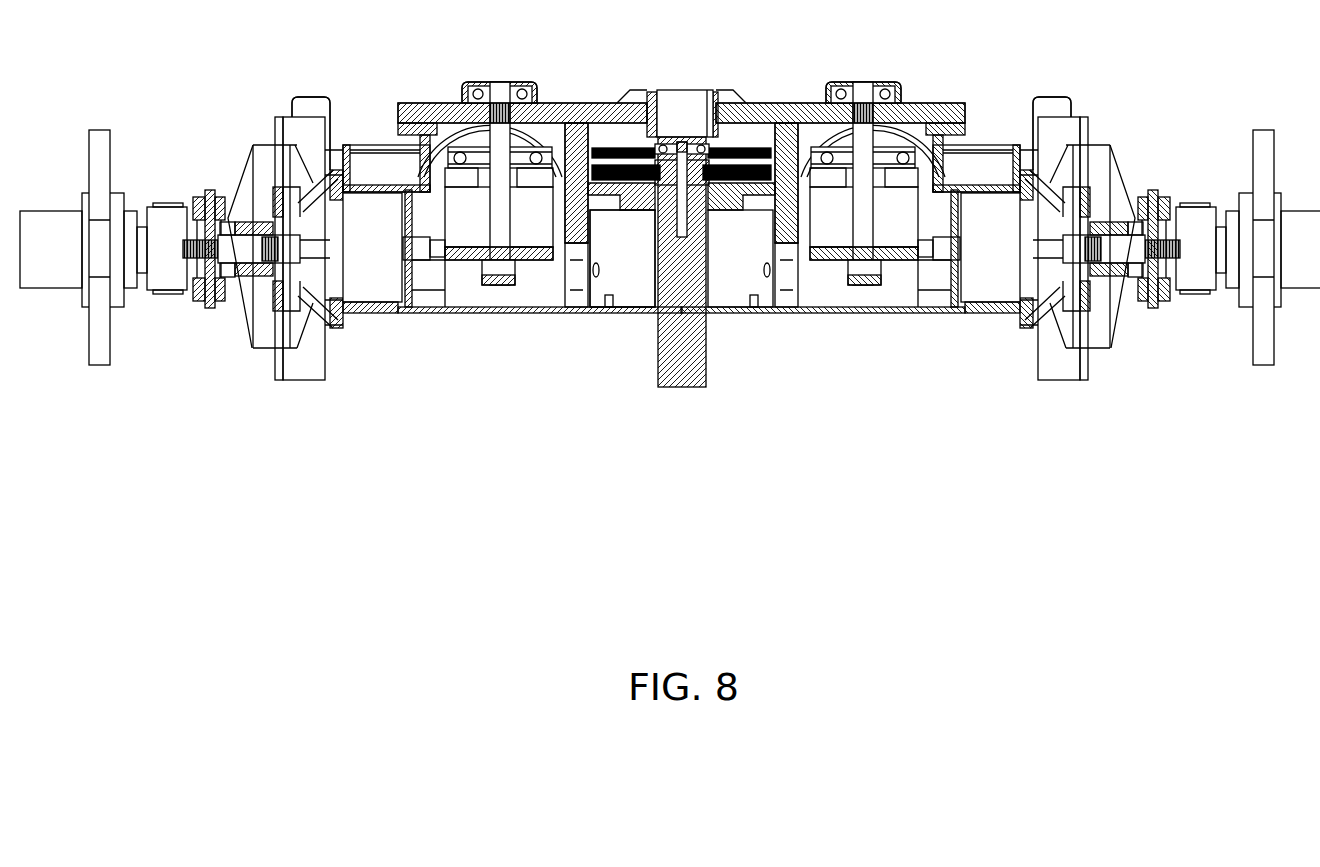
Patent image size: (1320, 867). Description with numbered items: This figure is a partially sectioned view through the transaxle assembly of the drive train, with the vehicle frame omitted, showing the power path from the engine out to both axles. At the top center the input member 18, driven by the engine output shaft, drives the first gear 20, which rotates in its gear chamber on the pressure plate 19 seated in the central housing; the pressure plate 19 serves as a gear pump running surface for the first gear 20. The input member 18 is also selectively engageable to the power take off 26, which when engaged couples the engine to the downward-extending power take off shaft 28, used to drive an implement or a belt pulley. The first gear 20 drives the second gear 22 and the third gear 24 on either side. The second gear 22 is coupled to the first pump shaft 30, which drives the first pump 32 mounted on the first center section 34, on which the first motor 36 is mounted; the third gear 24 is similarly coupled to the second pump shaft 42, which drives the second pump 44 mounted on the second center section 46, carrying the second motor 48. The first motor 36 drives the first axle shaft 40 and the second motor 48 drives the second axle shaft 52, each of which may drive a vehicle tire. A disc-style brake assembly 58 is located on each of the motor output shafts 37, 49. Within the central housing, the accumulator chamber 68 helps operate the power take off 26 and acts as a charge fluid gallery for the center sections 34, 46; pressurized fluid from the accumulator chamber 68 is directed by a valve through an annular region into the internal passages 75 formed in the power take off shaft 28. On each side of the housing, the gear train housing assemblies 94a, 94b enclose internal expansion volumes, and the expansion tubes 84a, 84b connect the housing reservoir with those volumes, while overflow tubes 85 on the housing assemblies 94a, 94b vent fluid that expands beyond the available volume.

The input member 18 is at (707, 105).
The pressure plate 19 is at (752, 108).
The first gear 20 is at (596, 108).
The second gear 22 is at (422, 105).
The third gear 24 is at (932, 108).
The power take off 26 is at (732, 245).
The power take off shaft 28 is at (706, 362).
The first pump shaft 30 is at (497, 92).
The first pump 32 is at (533, 292).
The first center section 34 is at (460, 290).
The first motor 36 is at (382, 330).
The motor output shaft 37 is at (243, 255).
The first axle shaft 40 is at (141, 215).
The second pump shaft 42 is at (863, 92).
The second pump 44 is at (830, 292).
The second center section 46 is at (927, 287).
The second motor 48 is at (981, 330).
The motor output shaft 49 is at (1120, 255).
The second axle shaft 52 is at (1222, 215).
The brake assembly 58 is at (195, 176).
The accumulator chamber 68 is at (660, 290).
The internal passages 75 is at (680, 212).
The expansion tube 84a is at (374, 145).
The expansion tube 84b is at (988, 145).
The overflow tubes 85 is at (300, 97).
The gear train housing assembly 94a is at (241, 120).
The gear train housing assembly 94b is at (1122, 120).